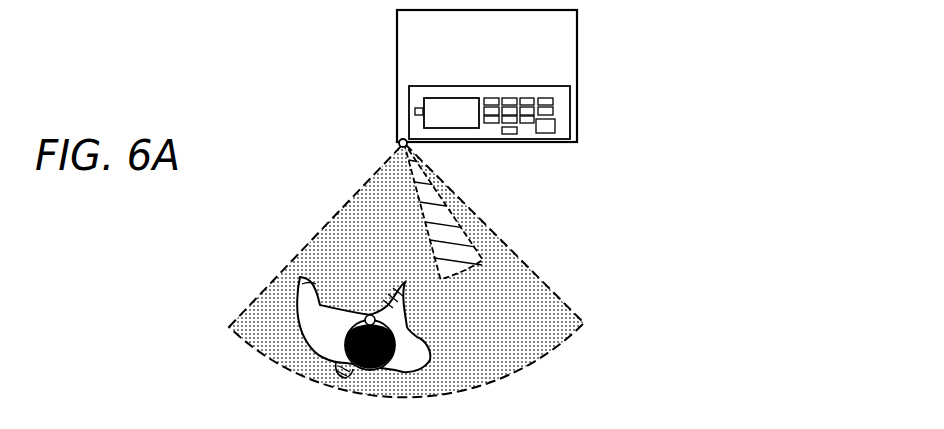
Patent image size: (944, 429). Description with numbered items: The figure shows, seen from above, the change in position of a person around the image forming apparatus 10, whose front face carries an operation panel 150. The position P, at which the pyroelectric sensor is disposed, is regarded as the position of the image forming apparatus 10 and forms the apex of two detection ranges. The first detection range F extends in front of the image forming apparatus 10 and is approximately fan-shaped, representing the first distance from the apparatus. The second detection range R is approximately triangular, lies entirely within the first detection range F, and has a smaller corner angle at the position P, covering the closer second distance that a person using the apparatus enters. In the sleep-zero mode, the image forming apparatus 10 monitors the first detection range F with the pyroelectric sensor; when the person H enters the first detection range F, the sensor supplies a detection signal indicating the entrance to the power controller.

The image forming apparatus 10 is at (514, 76).
The operation panel 150 is at (545, 86).
The position P is at (395, 151).
The second detection range R is at (461, 245).
The first detection range F is at (270, 358).
The person H is at (327, 350).